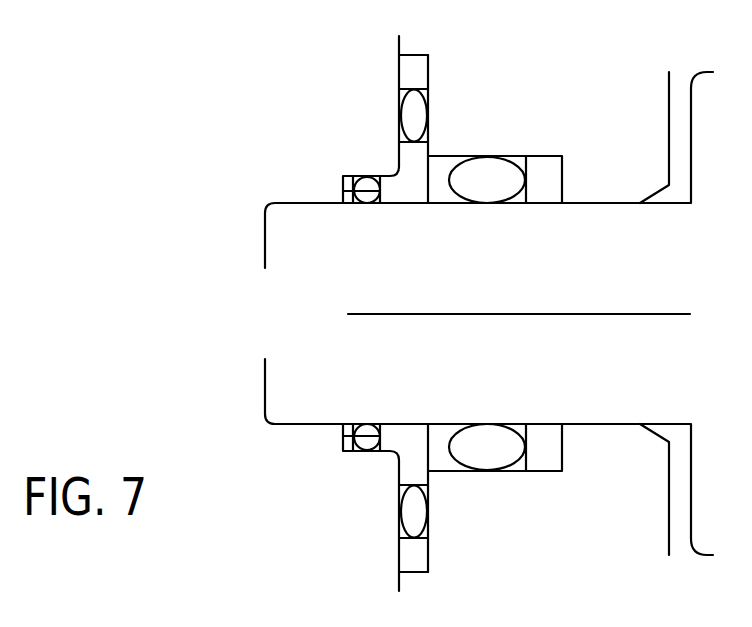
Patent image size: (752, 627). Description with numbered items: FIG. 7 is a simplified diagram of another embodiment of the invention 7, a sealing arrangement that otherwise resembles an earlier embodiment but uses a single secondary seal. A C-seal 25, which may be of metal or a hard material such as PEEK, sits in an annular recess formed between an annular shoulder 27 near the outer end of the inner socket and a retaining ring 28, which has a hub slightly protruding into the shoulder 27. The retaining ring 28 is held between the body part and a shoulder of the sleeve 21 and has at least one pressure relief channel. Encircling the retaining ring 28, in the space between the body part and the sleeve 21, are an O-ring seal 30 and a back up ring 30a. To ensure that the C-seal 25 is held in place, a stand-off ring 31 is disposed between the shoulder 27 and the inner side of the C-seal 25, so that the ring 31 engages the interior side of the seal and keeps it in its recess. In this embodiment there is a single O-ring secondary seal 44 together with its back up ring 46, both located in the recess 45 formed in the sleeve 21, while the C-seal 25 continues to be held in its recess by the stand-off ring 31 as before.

The shaft 7 is at (700, 246).
The sleeve 21 is at (602, 107).
The C-seal 25 is at (367, 205).
The annular shoulder 27 is at (343, 182).
The retaining ring 28 is at (402, 158).
The O-ring seal 30 is at (402, 118).
The back up ring 30a is at (422, 72).
The stand-off ring 31 is at (346, 206).
The O-ring secondary seal 44 is at (497, 163).
The recess 45 is at (541, 157).
The back up ring 46 is at (555, 181).